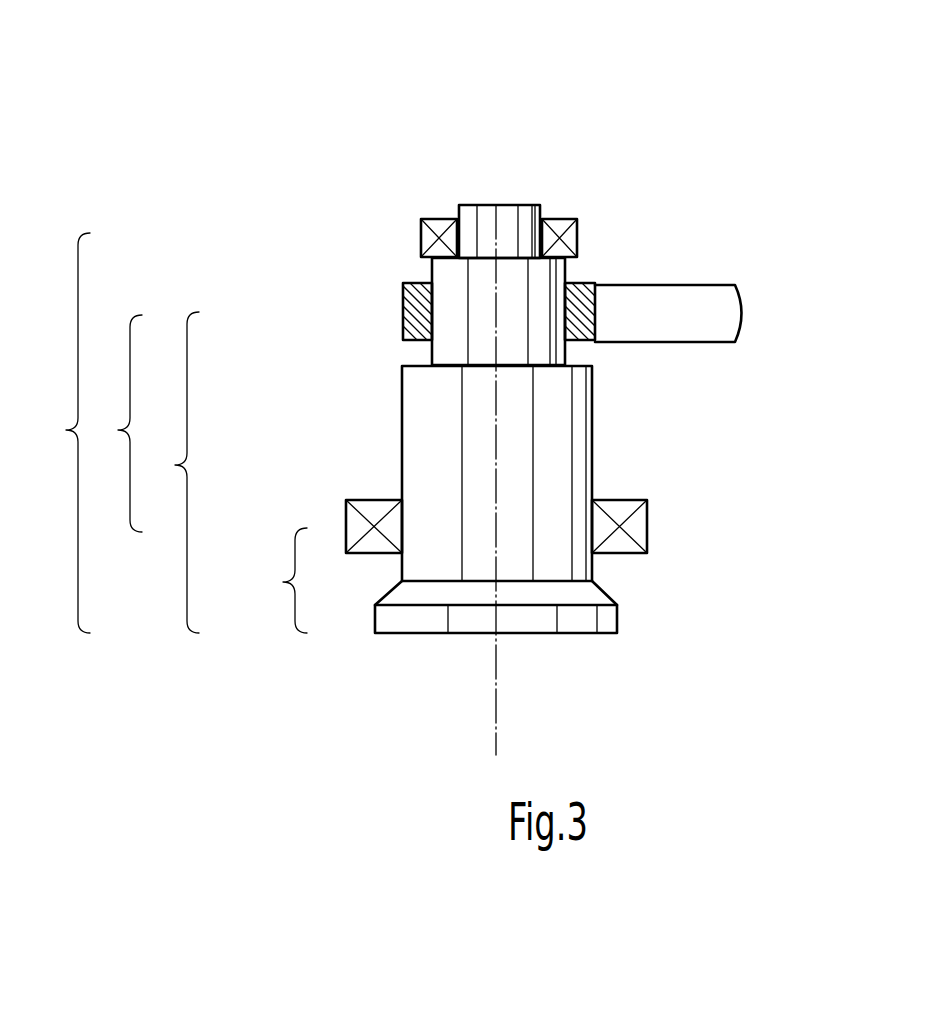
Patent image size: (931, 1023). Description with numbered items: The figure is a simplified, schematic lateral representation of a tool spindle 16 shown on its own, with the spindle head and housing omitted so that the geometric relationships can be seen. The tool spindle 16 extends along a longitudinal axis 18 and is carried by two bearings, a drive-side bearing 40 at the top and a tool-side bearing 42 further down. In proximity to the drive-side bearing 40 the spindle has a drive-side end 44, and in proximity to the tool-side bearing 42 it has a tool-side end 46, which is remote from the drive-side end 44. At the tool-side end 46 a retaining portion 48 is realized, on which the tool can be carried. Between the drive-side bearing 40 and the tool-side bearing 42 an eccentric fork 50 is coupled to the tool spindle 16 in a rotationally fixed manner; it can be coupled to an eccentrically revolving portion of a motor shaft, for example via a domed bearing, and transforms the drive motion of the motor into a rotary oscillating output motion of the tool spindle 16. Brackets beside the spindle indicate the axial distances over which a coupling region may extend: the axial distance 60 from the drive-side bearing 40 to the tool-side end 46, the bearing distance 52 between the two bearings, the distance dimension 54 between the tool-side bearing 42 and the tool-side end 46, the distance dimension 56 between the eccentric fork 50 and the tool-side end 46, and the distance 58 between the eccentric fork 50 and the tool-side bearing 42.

The tool spindle 16 is at (612, 430).
The longitudinal axis 18 is at (492, 710).
The drive-side bearing 40 is at (570, 243).
The tool-side bearing 42 is at (637, 532).
The drive-side end 44 is at (490, 203).
The tool-side end 46 is at (563, 658).
The retaining portion 48 is at (418, 623).
The eccentric fork 50 is at (670, 308).
The bearing distance 52 is at (307, 238).
The distance dimension 54 is at (281, 580).
The distance dimension 56 is at (172, 472).
The distance 58 is at (117, 423).
The axial distance 60 is at (61, 433).